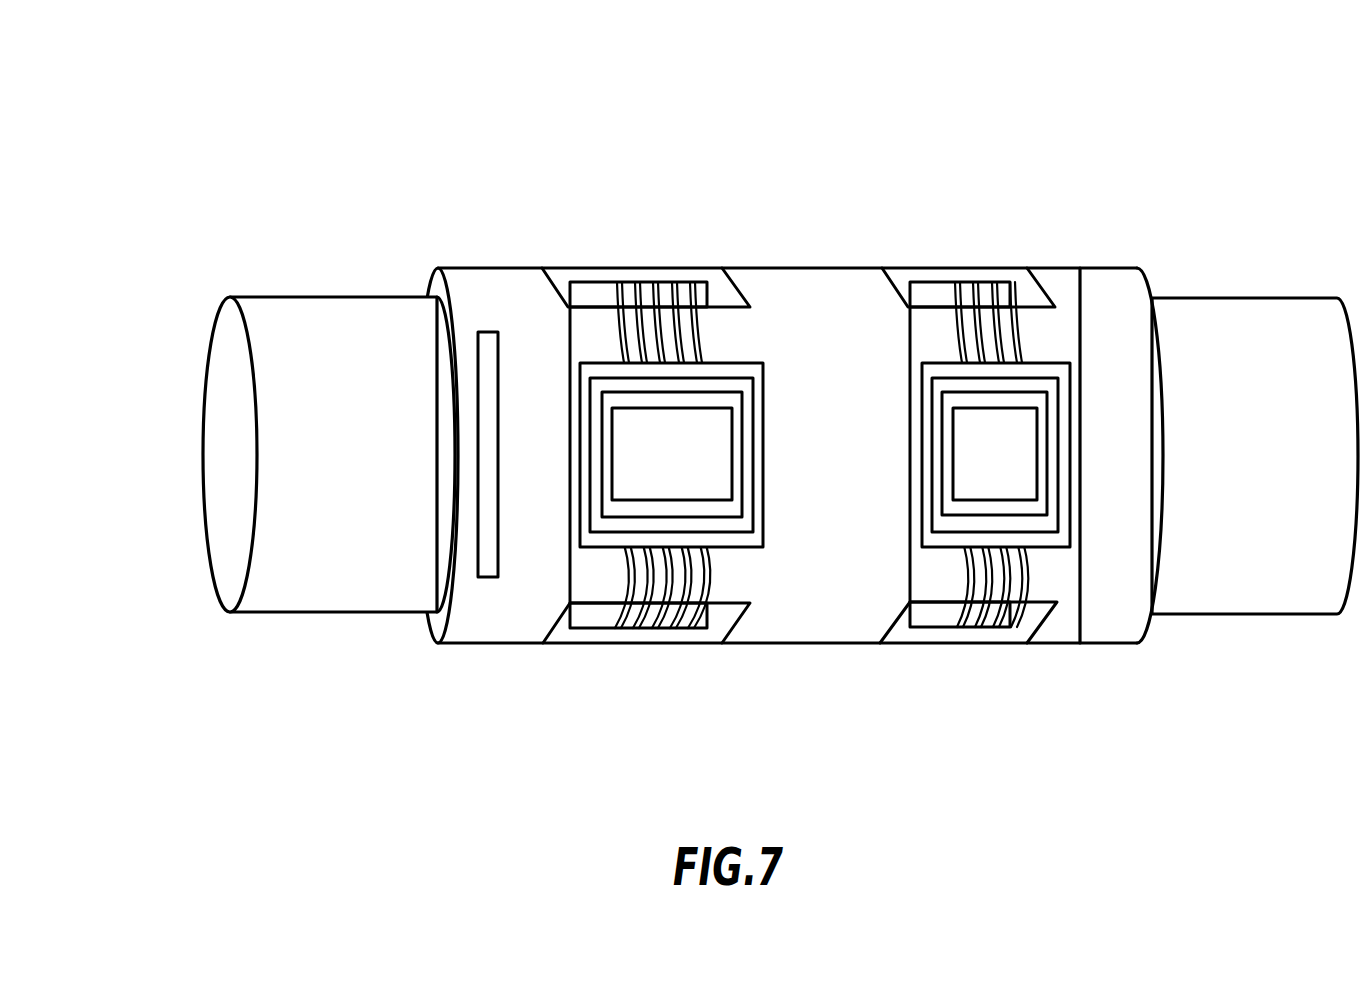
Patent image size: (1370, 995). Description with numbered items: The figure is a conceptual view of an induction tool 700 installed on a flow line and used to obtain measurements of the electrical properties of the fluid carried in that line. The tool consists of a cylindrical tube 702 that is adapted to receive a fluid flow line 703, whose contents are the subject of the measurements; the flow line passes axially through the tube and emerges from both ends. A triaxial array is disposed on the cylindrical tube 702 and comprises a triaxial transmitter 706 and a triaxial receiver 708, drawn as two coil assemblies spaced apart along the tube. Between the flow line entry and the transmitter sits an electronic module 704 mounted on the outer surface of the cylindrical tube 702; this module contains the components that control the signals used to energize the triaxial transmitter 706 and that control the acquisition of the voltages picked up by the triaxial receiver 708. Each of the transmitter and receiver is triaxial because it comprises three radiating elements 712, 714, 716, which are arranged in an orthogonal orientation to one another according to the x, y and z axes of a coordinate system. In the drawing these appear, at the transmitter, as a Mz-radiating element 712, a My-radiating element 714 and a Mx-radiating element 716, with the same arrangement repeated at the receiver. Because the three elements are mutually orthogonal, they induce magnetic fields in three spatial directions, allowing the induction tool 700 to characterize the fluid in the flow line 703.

The induction tool 700 is at (193, 172).
The cylindrical tube 702 is at (1109, 320).
The fluid flow line 703 is at (363, 505).
The electronic module 704 is at (490, 340).
The triaxial transmitter 706 is at (552, 322).
The triaxial receiver 708 is at (932, 343).
The radiating element 712 is at (615, 568).
The radiating element 714 is at (652, 470).
The radiating element 716 is at (678, 645).